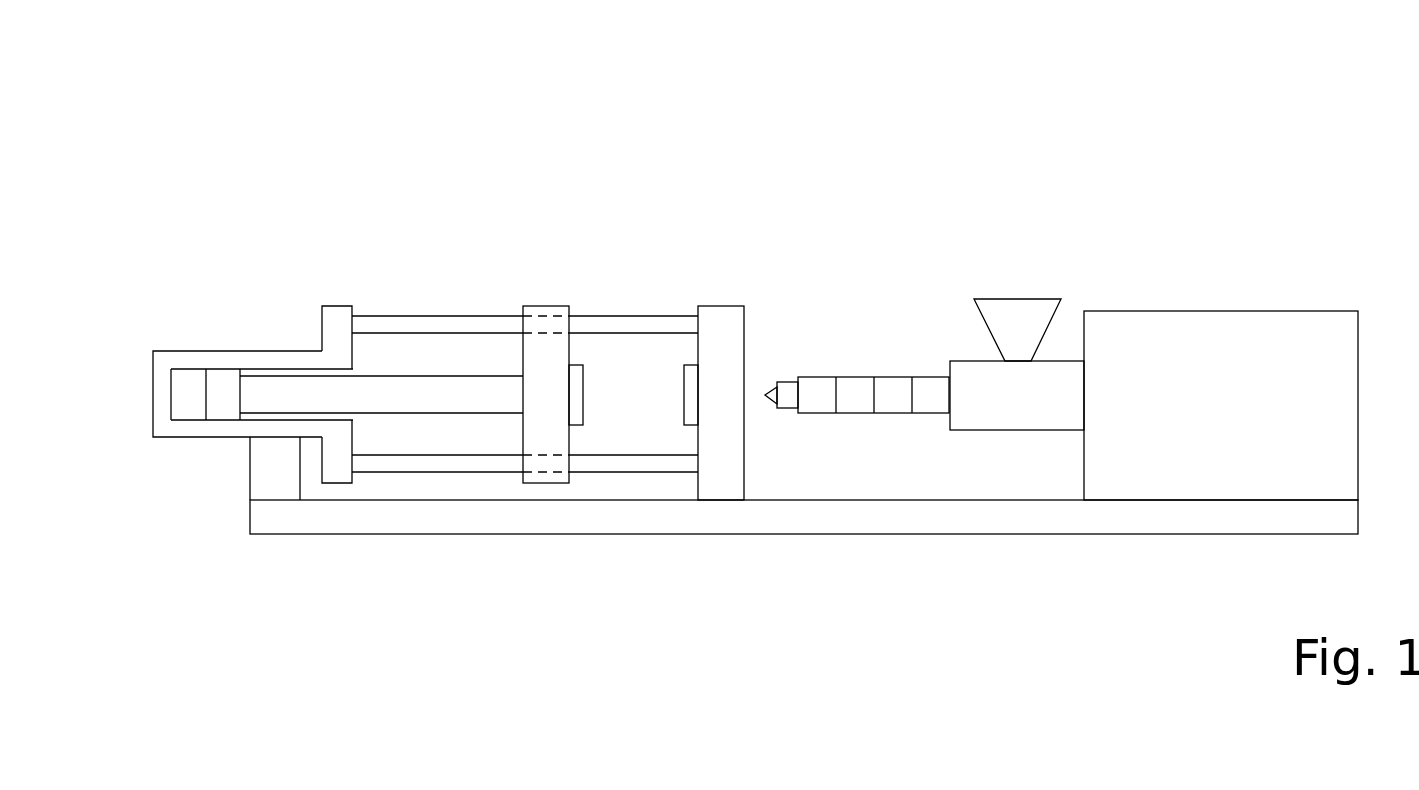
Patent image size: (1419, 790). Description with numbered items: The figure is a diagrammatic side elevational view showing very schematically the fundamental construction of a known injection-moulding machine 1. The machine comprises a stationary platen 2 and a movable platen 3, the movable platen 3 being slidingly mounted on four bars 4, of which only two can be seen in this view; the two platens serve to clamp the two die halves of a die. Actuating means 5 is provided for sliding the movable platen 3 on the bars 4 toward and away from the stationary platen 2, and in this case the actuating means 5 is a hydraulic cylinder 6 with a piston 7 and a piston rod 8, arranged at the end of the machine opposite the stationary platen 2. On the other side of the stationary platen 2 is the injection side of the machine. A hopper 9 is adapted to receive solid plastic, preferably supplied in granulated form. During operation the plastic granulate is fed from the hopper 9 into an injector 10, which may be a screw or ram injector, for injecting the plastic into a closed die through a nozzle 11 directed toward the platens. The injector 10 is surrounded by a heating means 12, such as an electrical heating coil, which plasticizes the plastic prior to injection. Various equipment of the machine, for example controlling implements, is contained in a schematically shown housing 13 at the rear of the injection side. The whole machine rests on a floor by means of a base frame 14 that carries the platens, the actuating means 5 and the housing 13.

The injection-moulding machine 1 is at (868, 167).
The stationary platen 2 is at (716, 322).
The movable platen 3 is at (543, 340).
The bars 4 is at (633, 465).
The actuating means 5 is at (232, 297).
The hydraulic cylinder 6 is at (160, 440).
The piston 7 is at (220, 412).
The piston rod 8 is at (440, 400).
The hopper 9 is at (1021, 320).
The injector 10 is at (786, 410).
The nozzle 11 is at (774, 388).
The heating means 12 is at (893, 413).
The housing 13 is at (1293, 335).
The base frame 14 is at (1255, 523).